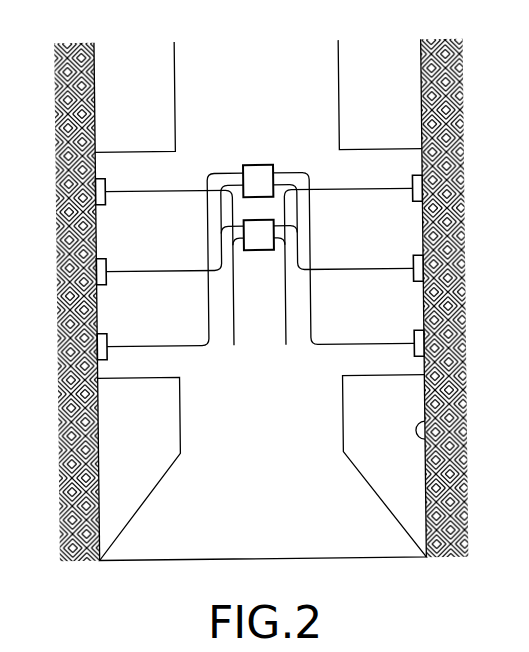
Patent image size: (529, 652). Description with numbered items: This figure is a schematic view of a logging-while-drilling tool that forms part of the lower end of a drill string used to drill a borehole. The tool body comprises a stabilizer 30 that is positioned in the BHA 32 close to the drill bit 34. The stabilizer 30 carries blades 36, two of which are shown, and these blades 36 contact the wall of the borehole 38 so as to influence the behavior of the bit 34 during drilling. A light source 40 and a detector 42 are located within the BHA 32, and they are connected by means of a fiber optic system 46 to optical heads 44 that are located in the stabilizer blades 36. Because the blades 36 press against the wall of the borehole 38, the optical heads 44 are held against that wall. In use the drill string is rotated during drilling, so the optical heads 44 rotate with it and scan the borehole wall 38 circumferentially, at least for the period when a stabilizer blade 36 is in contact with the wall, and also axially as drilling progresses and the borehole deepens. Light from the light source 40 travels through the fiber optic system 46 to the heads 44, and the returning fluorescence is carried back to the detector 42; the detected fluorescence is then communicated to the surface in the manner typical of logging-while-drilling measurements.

The stabilizer 30 is at (362, 387).
The BHA 32 is at (270, 83).
The drill bit 34 is at (294, 517).
The blades 36 is at (174, 254).
The wall of the borehole 38 is at (425, 441).
The light source 40 is at (262, 165).
The detector 42 is at (260, 250).
The optical heads 44 is at (97, 190).
The fiber optic system 46 is at (298, 351).